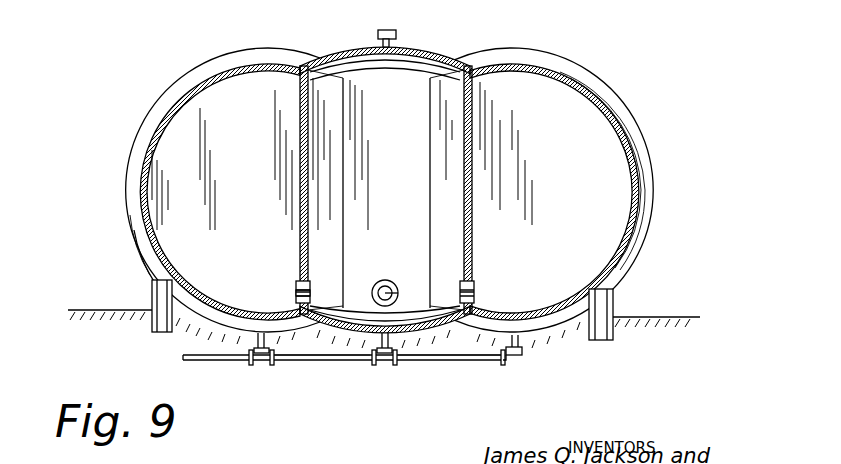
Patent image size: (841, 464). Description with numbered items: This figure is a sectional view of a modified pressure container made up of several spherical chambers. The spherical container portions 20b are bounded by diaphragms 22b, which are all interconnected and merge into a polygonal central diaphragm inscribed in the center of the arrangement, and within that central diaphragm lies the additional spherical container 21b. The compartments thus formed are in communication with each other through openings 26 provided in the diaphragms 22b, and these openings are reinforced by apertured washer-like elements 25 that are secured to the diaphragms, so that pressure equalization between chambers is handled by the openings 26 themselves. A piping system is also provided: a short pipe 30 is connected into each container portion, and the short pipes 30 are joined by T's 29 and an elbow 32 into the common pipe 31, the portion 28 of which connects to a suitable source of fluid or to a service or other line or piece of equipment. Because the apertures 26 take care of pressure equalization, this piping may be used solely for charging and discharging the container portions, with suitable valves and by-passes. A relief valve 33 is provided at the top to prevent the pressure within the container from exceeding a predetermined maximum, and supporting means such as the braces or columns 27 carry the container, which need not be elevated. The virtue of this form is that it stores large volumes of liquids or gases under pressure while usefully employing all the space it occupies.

The spherical container portions 20b is at (138, 162).
The additional spherical container 21b is at (440, 55).
The diaphragms 22b is at (300, 144).
The apertured washer-like elements 25 is at (318, 278).
The openings 26 is at (296, 292).
The braces or columns 27 is at (152, 292).
The portion of common pipe 28 is at (220, 365).
The T's 29 is at (252, 366).
The short pipe 30 is at (268, 352).
The common pipe 31 is at (389, 372).
The elbow 32 is at (504, 364).
The relief valve 33 is at (396, 36).